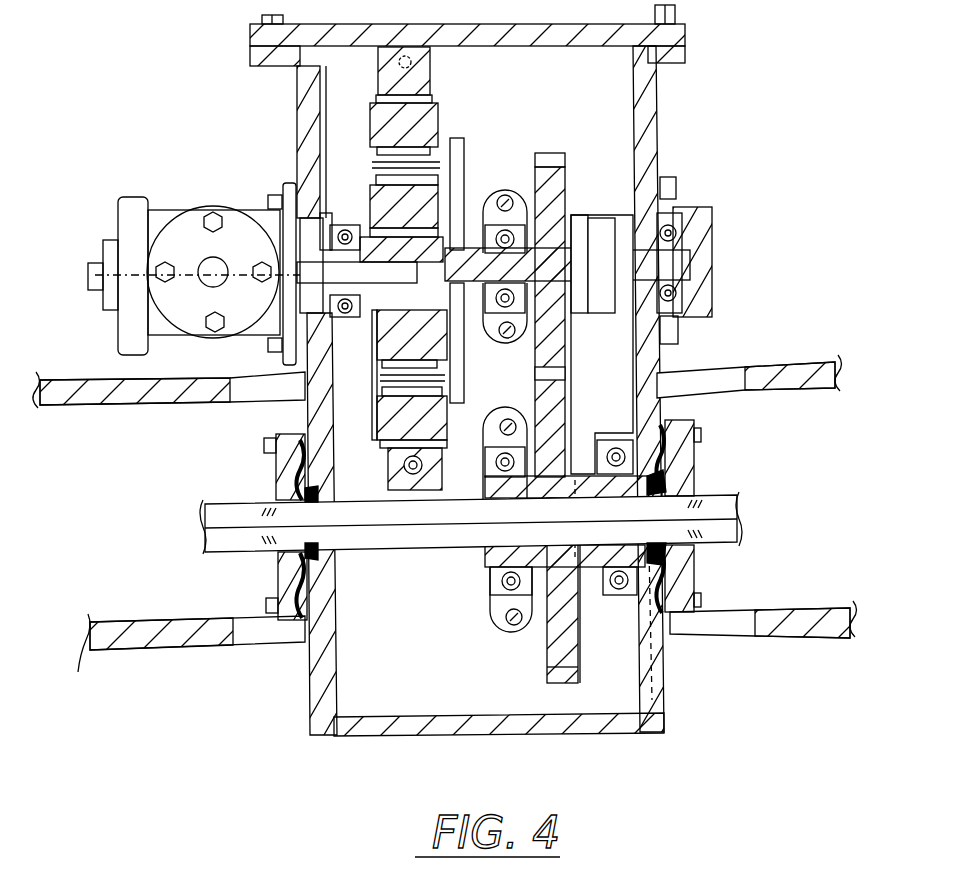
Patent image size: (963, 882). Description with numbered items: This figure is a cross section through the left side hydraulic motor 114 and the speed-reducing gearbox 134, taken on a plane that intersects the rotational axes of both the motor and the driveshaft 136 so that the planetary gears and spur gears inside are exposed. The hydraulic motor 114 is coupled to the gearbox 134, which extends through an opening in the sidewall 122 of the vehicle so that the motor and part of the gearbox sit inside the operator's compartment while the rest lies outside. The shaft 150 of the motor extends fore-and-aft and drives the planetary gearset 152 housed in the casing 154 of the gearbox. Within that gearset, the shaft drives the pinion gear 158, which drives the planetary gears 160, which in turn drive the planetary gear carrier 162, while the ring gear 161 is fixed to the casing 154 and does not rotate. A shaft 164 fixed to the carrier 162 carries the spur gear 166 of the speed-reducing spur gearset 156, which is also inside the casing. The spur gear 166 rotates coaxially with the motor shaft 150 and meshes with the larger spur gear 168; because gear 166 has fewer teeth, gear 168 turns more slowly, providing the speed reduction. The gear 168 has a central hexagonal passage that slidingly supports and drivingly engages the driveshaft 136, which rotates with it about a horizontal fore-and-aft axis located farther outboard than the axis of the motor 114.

The hydraulic motor 114 is at (160, 210).
The sidewall 122 is at (137, 404).
The gearbox 134 is at (296, 127).
The driveshaft 136 is at (238, 501).
The shaft 150 is at (86, 262).
The gearset 152 is at (473, 104).
The casing 154 is at (628, 58).
The spur gearset 156 is at (547, 134).
The pinion gear 158 is at (366, 233).
The planetary gears 160 is at (367, 128).
The ring gear 161 is at (388, 478).
The planetary gear carrier 162 is at (462, 152).
The shaft 164 is at (572, 245).
The spur gear 166 is at (566, 185).
The spur gear 168 is at (565, 397).